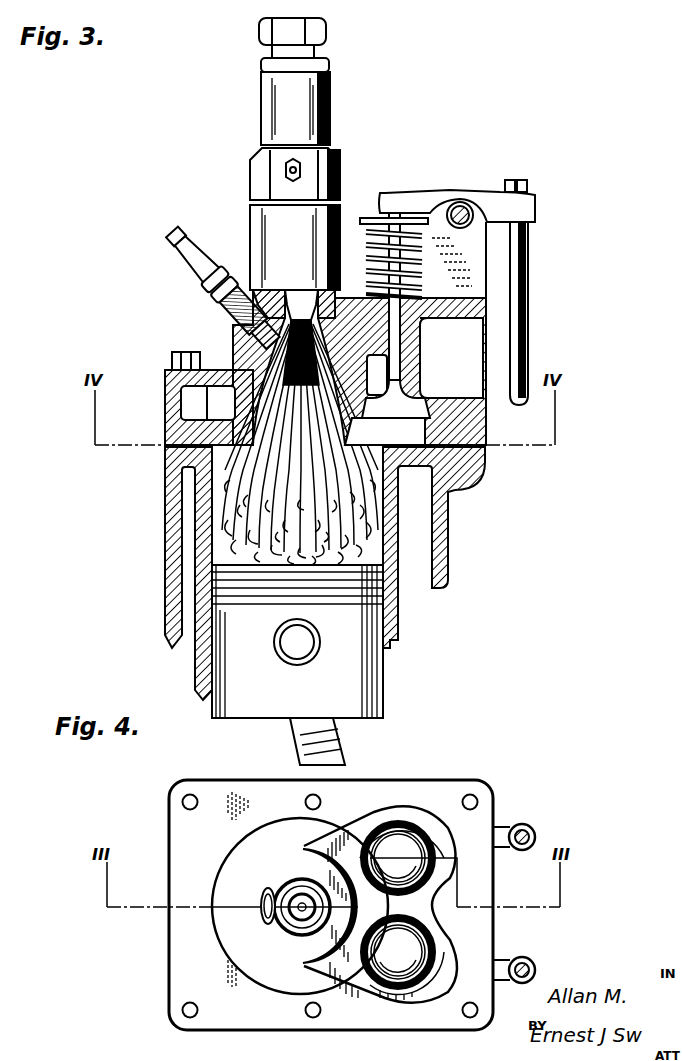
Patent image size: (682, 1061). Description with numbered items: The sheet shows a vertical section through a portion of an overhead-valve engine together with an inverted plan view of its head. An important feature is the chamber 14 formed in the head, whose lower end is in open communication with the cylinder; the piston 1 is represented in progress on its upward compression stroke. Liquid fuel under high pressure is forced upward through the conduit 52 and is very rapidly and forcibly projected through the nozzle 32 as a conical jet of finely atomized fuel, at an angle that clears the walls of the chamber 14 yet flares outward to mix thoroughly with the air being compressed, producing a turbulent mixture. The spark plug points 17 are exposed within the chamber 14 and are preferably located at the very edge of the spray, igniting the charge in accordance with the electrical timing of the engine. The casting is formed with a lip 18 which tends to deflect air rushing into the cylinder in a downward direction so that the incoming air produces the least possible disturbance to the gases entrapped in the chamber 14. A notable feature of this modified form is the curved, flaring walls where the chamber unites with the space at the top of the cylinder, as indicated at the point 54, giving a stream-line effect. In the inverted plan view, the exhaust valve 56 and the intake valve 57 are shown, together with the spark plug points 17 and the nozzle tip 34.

In FIG. 3, the piston 1 is at (265, 680).
In FIG. 3, the chamber 14 is at (252, 410).
In FIG. 3, the spark plug points 17 is at (237, 347).
In FIG. 4, the spark plug points 17 is at (276, 893).
In FIG. 3, the lip 18 is at (343, 425).
In FIG. 4, the lip 18 is at (350, 830).
In FIG. 3, the nozzle 32 is at (301, 300).
In FIG. 3, the nozzle tip 34 is at (340, 298).
In FIG. 4, the nozzle tip 34 is at (300, 912).
In FIG. 3, the conduit 52 is at (286, 170).
In FIG. 3, the point of curved flaring walls 54 is at (228, 448).
In FIG. 3, the exhaust valve 56 is at (408, 398).
In FIG. 4, the exhaust valve 56 is at (402, 858).
In FIG. 4, the intake valve 57 is at (404, 956).